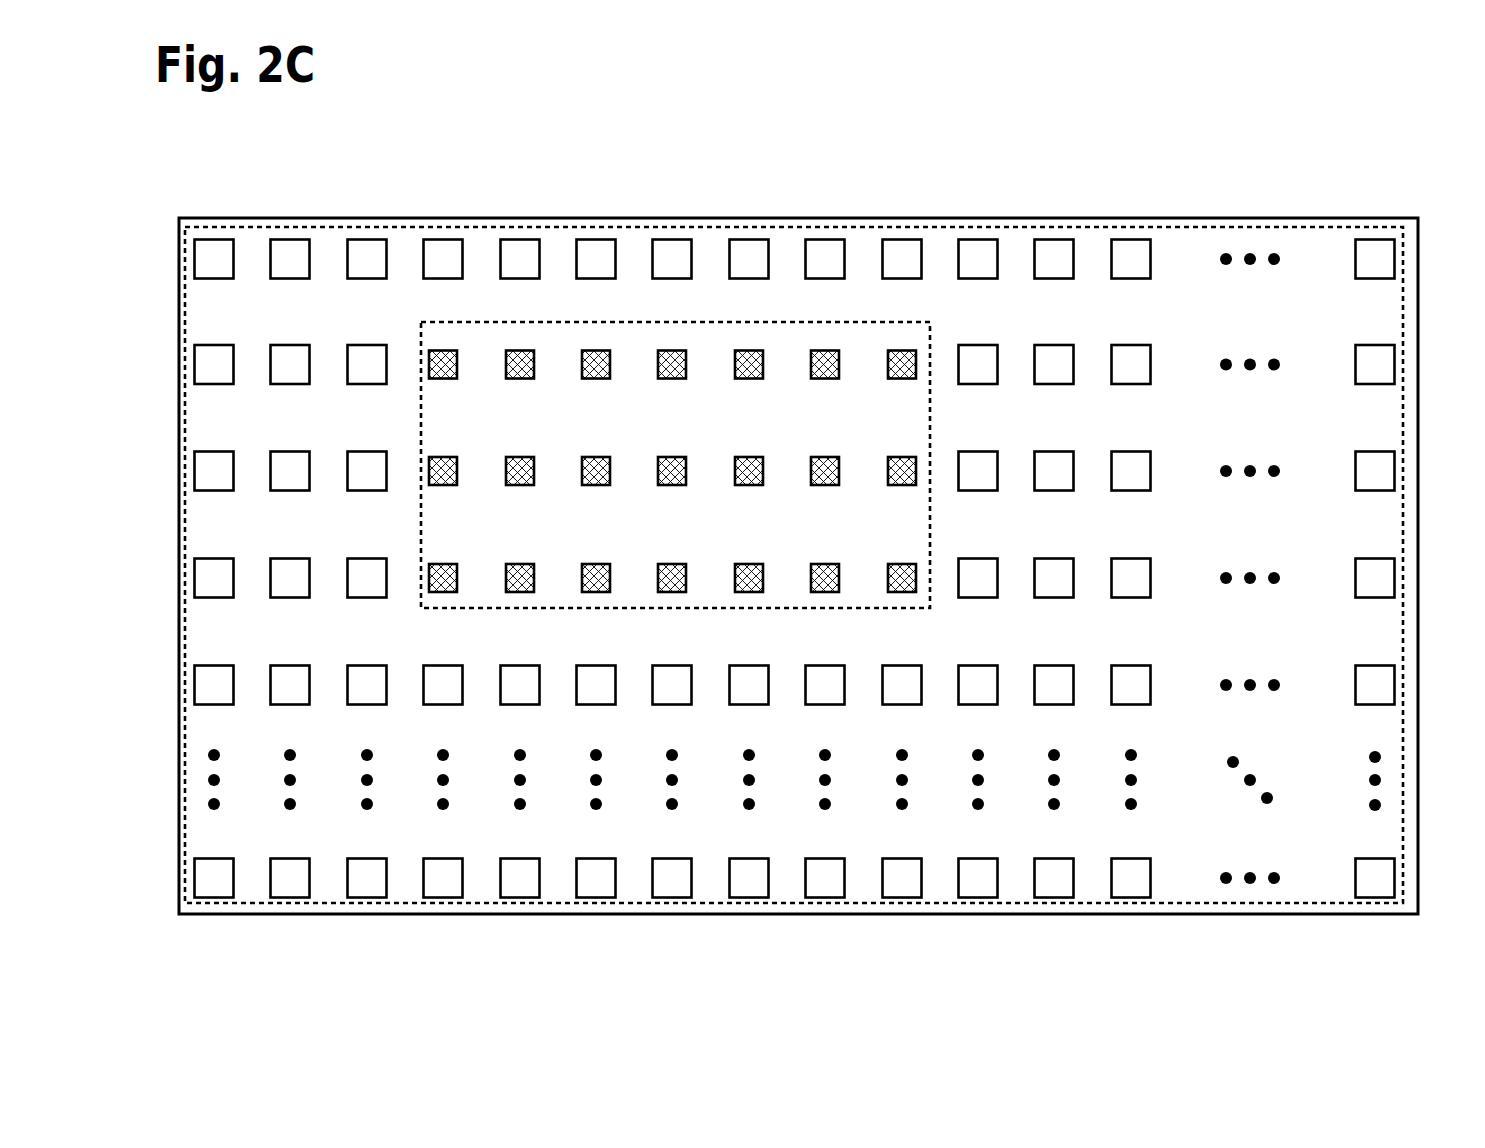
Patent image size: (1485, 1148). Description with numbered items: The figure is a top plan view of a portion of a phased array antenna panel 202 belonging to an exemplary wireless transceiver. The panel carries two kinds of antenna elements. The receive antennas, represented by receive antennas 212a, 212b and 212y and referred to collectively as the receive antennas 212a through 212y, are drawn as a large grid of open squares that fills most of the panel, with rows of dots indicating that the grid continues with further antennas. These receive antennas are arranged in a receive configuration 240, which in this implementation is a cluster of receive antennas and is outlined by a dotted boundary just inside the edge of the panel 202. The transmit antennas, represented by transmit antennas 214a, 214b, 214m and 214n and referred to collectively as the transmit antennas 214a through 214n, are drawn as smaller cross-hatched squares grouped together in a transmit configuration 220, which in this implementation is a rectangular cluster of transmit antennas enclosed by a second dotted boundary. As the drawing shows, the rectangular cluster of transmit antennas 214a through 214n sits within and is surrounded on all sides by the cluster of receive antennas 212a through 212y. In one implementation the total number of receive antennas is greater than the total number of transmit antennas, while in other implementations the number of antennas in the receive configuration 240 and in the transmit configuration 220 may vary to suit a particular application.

The phased array antenna panel 202 is at (1306, 165).
The receive configuration 240 is at (1172, 226).
The transmit configuration 220 is at (800, 322).
The receive antenna 212a is at (217, 237).
The receive antenna 212b is at (292, 245).
The receive antenna 212y is at (1378, 899).
The transmit antenna 214a is at (443, 348).
The transmit antenna 214b is at (522, 350).
The transmit antenna 214m is at (826, 562).
The transmit antenna 214n is at (905, 562).